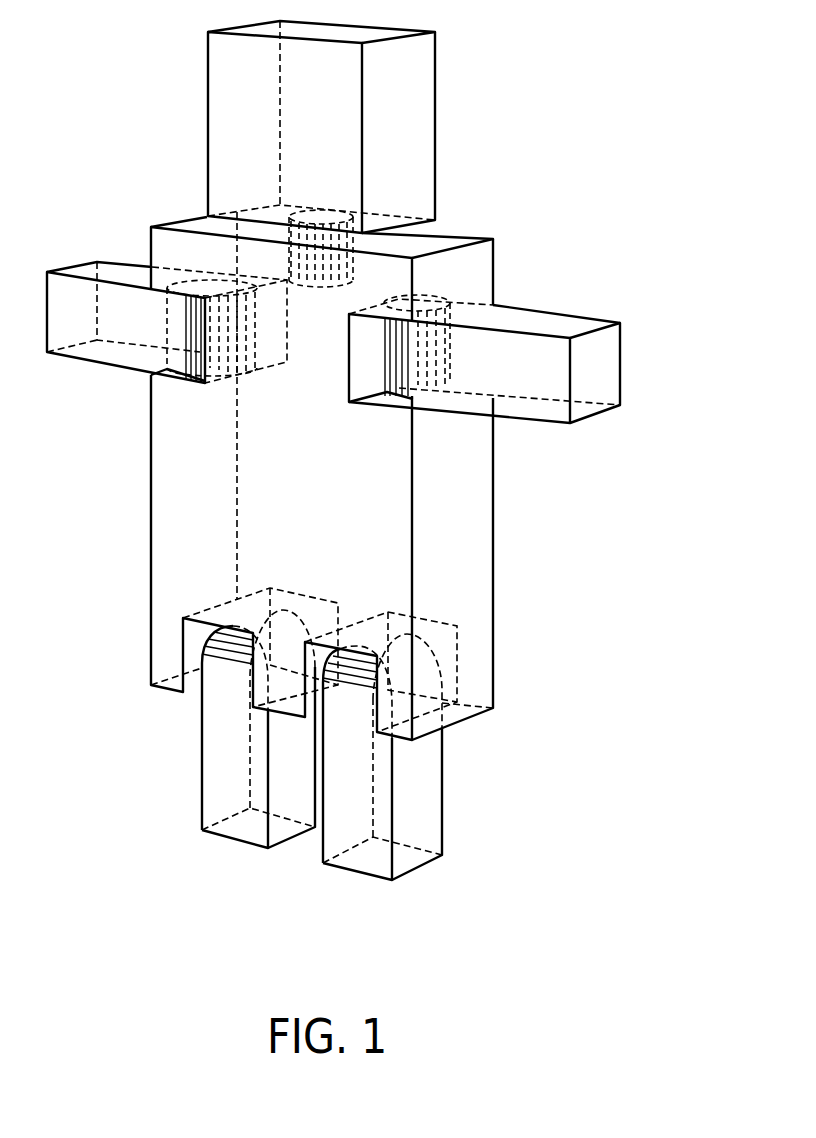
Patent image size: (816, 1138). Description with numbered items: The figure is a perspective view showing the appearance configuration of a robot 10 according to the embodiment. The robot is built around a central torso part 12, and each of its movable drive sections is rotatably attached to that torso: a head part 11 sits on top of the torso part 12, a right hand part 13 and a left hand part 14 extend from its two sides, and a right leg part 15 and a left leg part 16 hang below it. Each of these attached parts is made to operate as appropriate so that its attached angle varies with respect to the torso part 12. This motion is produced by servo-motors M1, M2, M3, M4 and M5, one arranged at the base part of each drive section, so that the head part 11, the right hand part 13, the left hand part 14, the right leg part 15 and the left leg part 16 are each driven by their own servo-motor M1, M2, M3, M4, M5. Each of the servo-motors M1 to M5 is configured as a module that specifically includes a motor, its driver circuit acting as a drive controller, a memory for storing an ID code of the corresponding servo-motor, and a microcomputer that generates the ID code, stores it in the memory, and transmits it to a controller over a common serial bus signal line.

The robot 10 is at (553, 104).
The head part 11 is at (217, 84).
The torso part 12 is at (162, 483).
The right hand part 13 is at (73, 270).
The left hand part 14 is at (567, 313).
The right leg part 15 is at (205, 759).
The left leg part 16 is at (430, 793).
The servo-motor M1 is at (325, 212).
The servo-motor M2 is at (232, 376).
The servo-motor M3 is at (391, 397).
The servo-motor M4 is at (230, 640).
The servo-motor M5 is at (354, 668).